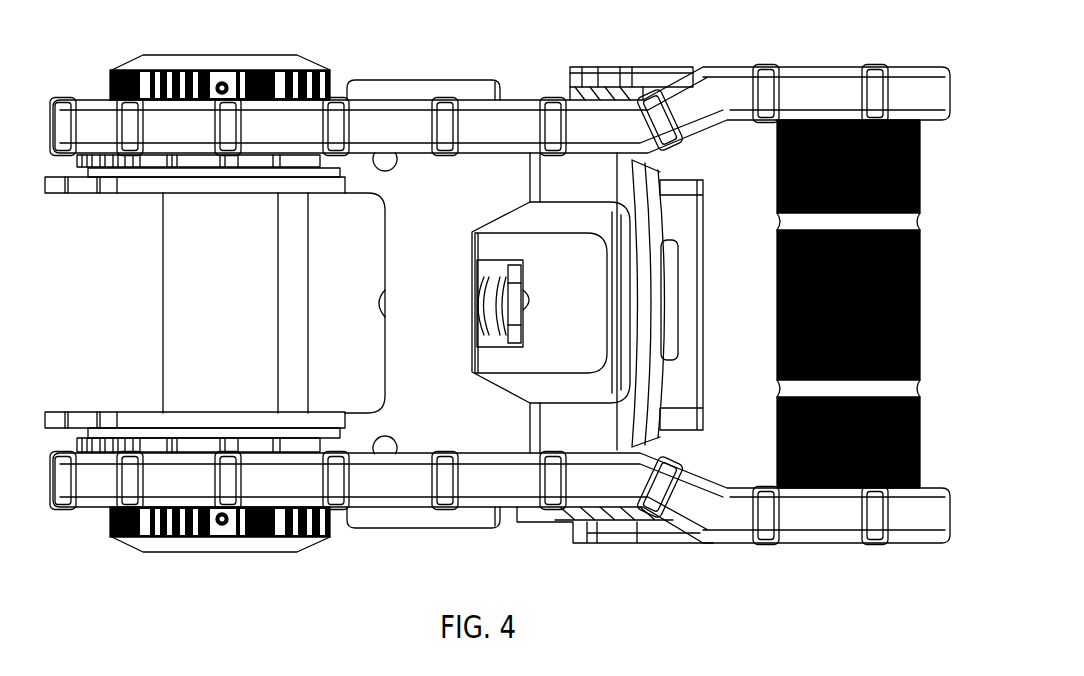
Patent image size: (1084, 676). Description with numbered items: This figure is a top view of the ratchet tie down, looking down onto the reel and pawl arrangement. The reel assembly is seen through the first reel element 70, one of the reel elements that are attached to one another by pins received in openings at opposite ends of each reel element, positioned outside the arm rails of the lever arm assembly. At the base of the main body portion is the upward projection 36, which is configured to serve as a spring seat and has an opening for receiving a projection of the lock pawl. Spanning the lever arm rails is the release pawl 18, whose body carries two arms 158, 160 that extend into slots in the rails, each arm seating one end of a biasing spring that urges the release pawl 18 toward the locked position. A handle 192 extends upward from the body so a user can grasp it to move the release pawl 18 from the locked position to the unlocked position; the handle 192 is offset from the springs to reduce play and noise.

The release pawl 18 is at (499, 365).
The upward projection 36 is at (518, 272).
The first reel element 70 is at (198, 342).
The arm 158 is at (390, 88).
The arm 160 is at (457, 517).
The handle 192 is at (660, 407).